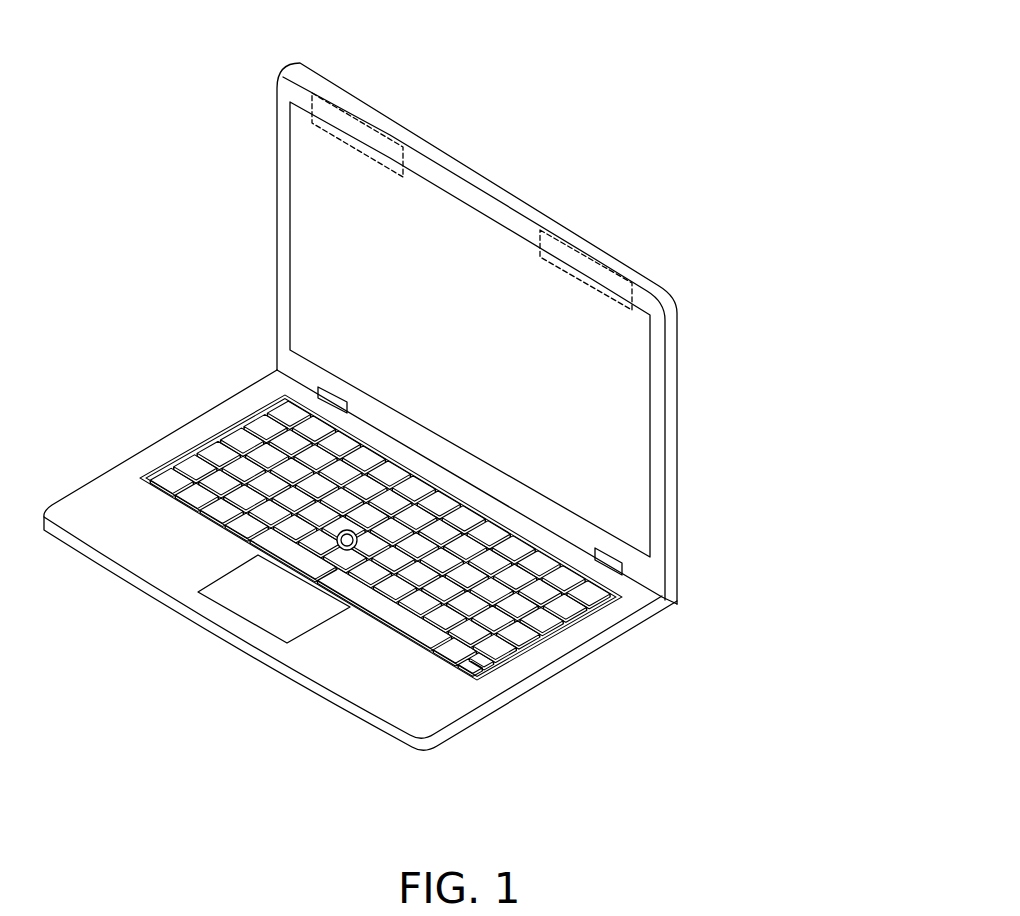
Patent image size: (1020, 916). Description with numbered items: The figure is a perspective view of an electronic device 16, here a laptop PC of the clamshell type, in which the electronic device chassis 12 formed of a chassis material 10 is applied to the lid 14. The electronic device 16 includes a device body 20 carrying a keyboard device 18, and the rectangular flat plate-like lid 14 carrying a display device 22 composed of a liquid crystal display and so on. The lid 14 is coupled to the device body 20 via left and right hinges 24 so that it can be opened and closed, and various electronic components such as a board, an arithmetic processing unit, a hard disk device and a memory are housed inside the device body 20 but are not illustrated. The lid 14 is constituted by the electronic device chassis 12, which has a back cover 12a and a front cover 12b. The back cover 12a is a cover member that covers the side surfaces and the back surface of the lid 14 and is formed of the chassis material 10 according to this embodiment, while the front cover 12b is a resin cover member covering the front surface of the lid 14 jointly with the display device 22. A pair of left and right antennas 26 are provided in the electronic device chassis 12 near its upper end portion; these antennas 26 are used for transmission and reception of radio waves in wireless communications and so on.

The electronic device 16 is at (218, 43).
The device body 20 is at (95, 467).
The keyboard device 18 is at (213, 437).
The lid 14 is at (573, 223).
The electronic device chassis 12 is at (833, 338).
The back cover 12a is at (678, 345).
The chassis material 10 is at (554, 333).
The front cover 12b is at (657, 417).
The display device 22 is at (455, 250).
The antenna 26 is at (365, 112).
The hinge 24 is at (332, 396).